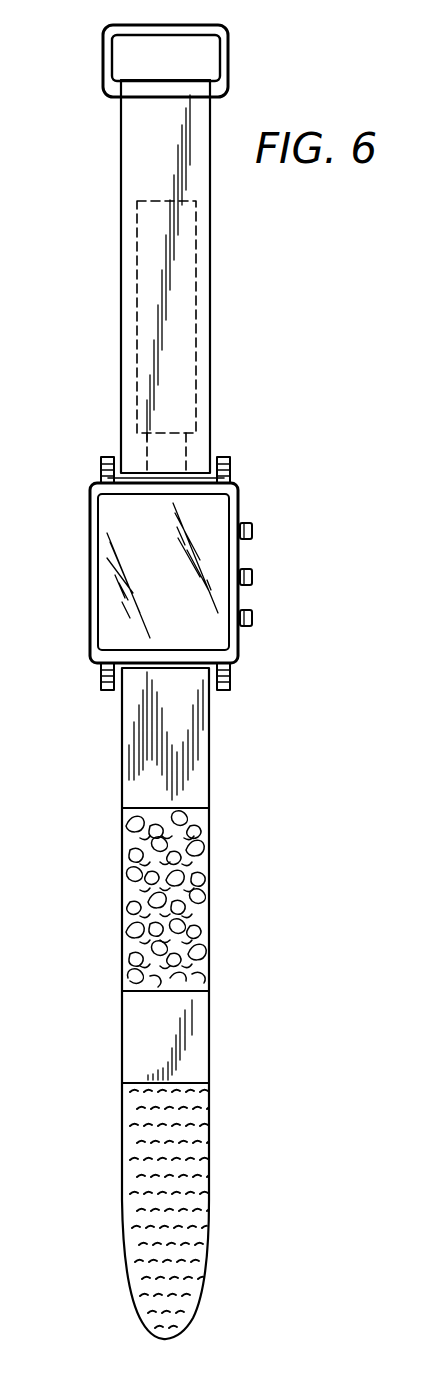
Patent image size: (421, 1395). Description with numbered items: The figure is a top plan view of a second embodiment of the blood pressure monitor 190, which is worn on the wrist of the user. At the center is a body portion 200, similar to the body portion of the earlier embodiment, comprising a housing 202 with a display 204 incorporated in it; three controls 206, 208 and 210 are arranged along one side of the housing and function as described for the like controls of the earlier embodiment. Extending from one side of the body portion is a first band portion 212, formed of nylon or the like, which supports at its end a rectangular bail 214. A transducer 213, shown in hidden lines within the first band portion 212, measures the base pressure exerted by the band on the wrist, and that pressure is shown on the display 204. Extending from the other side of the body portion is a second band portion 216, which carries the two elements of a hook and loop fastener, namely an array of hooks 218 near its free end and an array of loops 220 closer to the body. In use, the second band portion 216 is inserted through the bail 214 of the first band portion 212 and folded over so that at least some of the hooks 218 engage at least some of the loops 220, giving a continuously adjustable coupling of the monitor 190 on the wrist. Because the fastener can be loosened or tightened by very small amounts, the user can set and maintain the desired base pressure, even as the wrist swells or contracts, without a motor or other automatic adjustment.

The monitor 190 is at (83, 590).
The body portion 200 is at (237, 492).
The housing 202 is at (92, 488).
The display 204 is at (125, 617).
The control 206 is at (252, 531).
The control 208 is at (252, 577).
The control 210 is at (252, 620).
The first band portion 212 is at (128, 160).
The transducer 213 is at (197, 262).
The rectangular bail 214 is at (224, 26).
The second band portion 216 is at (198, 1022).
The array of hooks 218 is at (203, 1157).
The array of loops 220 is at (198, 877).